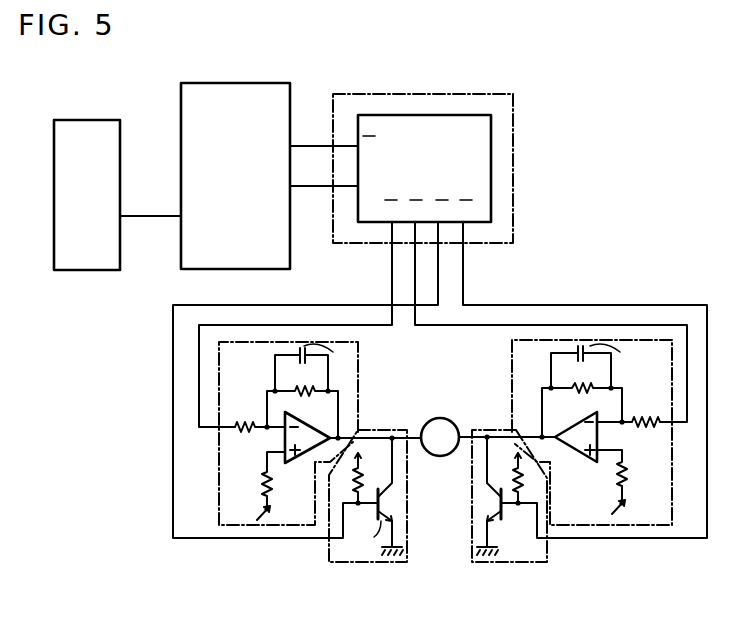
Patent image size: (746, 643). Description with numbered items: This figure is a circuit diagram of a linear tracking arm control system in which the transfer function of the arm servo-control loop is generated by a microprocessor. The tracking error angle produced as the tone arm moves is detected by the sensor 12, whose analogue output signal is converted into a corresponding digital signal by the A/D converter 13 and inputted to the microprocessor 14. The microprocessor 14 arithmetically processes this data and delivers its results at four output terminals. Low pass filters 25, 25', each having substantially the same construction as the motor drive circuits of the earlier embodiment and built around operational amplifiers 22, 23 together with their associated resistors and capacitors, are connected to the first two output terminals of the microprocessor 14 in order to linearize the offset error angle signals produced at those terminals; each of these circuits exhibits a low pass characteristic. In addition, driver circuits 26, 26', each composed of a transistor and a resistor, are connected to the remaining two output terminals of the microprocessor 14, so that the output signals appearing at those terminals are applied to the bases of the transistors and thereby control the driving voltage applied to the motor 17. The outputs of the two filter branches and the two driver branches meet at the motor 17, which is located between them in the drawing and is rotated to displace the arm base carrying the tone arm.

The sensor 12 is at (77, 120).
The A/D converter 13 is at (229, 83).
The microprocessor 14 is at (515, 138).
The motor 17 is at (440, 457).
The operational amplifier 22 is at (283, 437).
The operational amplifier 23 is at (583, 454).
The low pass filter 25 is at (314, 433).
The low pass filter 25' is at (572, 432).
The driver circuit 26 is at (368, 519).
The driver circuit 26' is at (511, 519).